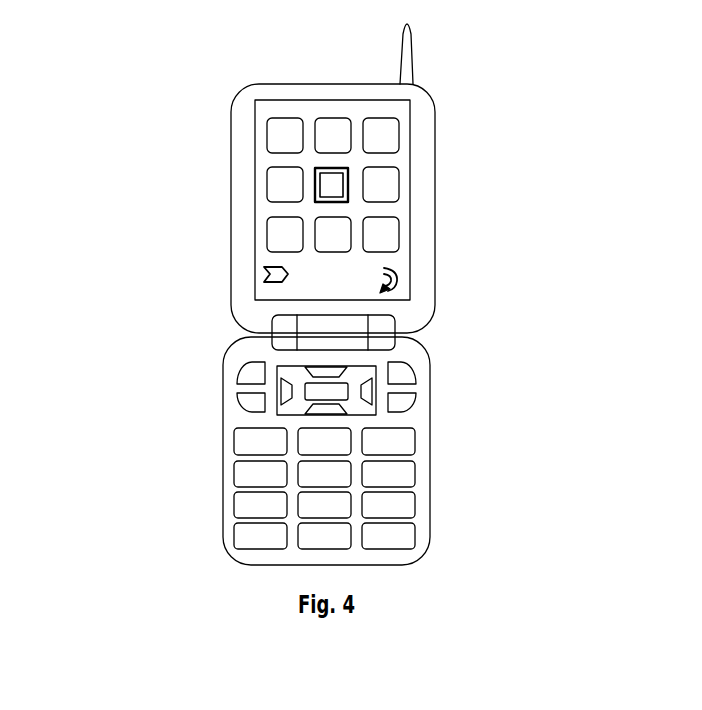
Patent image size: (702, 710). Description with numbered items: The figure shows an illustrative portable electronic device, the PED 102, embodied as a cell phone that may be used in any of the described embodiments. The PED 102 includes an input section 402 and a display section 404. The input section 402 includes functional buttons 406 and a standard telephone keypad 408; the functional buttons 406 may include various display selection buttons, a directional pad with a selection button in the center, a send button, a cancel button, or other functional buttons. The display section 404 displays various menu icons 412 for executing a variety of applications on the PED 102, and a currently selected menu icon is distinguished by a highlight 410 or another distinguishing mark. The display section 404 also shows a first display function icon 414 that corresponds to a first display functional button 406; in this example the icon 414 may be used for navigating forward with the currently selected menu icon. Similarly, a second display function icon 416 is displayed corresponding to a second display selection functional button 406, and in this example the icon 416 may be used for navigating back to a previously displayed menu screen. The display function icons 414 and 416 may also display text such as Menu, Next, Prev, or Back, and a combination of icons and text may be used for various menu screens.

The PED 102 is at (136, 118).
The input section 402 is at (442, 335).
The display section 404 is at (447, 320).
The functional buttons 406 is at (213, 365).
The standard telephone keypad 408 is at (210, 428).
The highlight 410 is at (317, 185).
The menu icons 412 is at (275, 233).
The first display function icon 414 is at (265, 268).
The second display function icon 416 is at (396, 288).